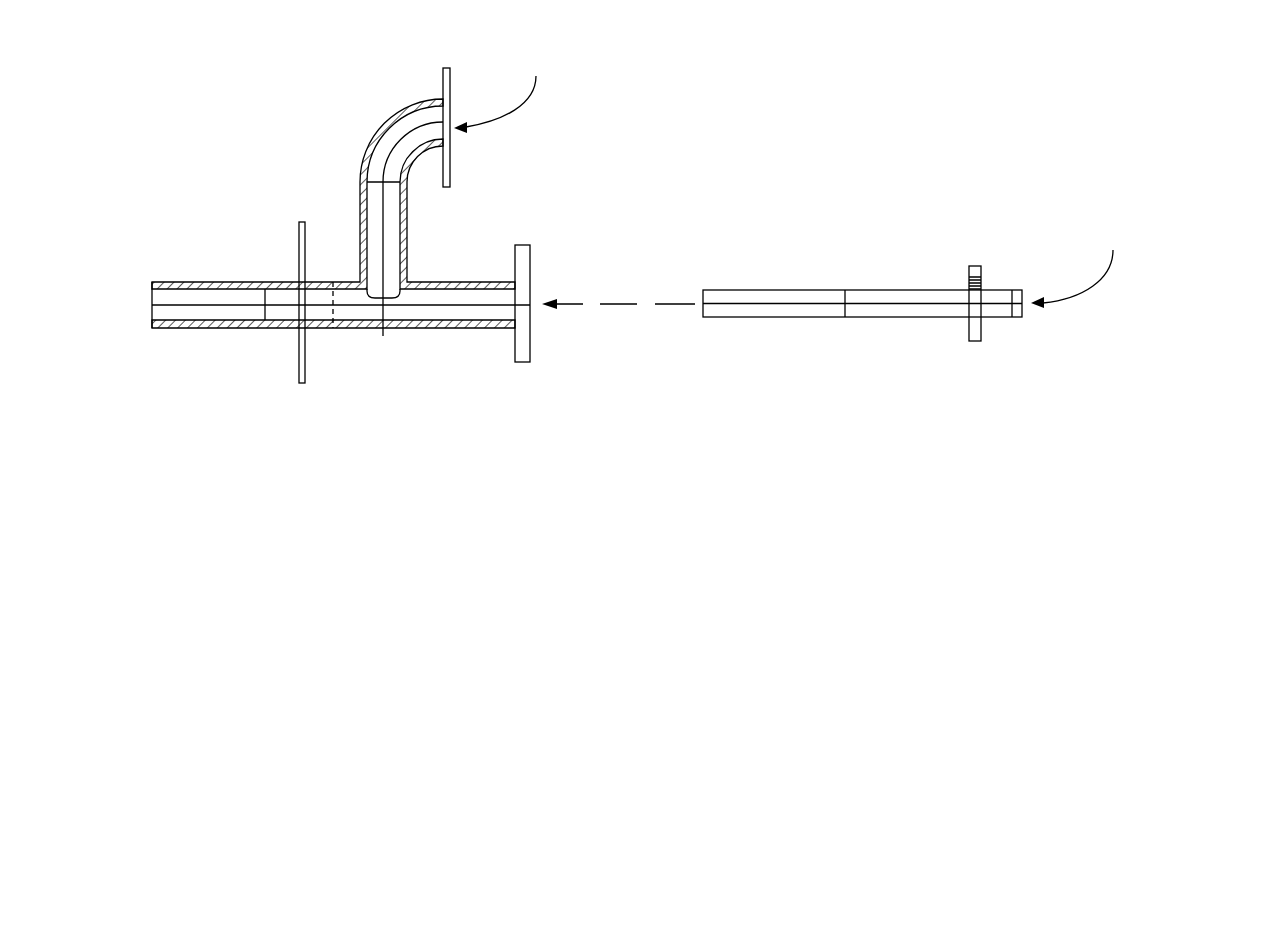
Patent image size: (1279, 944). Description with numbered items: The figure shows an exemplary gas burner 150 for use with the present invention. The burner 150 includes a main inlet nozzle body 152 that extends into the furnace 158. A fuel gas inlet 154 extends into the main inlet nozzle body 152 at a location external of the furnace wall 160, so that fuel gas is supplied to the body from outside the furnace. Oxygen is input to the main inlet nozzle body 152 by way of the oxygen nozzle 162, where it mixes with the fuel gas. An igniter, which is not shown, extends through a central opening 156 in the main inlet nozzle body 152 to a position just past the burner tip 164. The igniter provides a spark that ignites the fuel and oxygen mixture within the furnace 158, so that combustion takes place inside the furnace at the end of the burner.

The burner 150 is at (628, 259).
The main inlet nozzle body 152 is at (333, 330).
The fuel gas inlet 154 is at (829, 318).
The central opening 156 is at (456, 319).
The furnace 158 is at (197, 186).
The furnace wall 160 is at (300, 226).
The oxygen nozzle 162 is at (373, 134).
The burner tip 164 is at (147, 340).